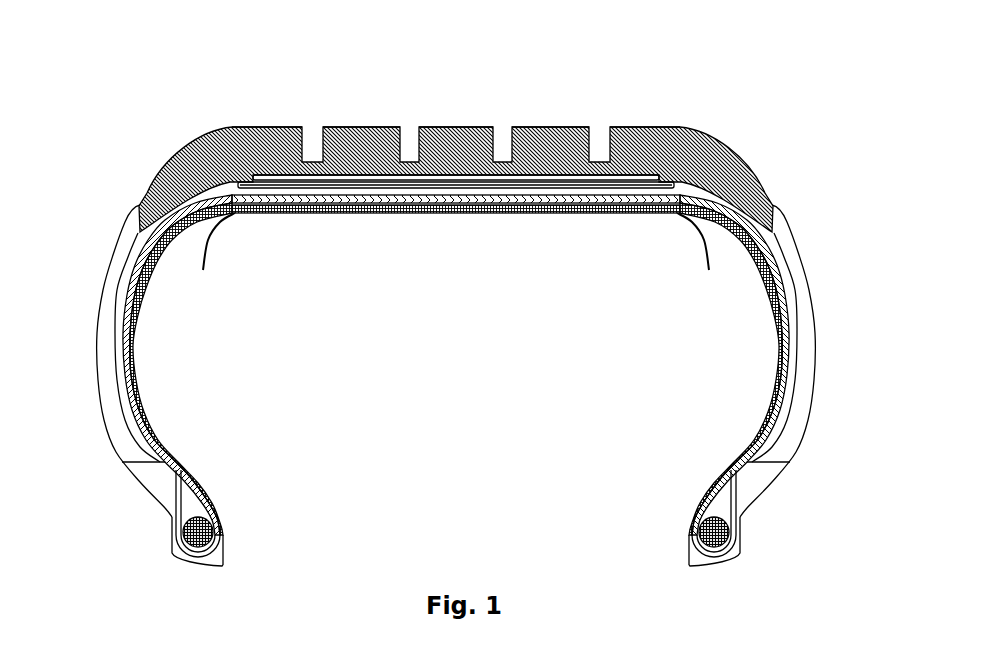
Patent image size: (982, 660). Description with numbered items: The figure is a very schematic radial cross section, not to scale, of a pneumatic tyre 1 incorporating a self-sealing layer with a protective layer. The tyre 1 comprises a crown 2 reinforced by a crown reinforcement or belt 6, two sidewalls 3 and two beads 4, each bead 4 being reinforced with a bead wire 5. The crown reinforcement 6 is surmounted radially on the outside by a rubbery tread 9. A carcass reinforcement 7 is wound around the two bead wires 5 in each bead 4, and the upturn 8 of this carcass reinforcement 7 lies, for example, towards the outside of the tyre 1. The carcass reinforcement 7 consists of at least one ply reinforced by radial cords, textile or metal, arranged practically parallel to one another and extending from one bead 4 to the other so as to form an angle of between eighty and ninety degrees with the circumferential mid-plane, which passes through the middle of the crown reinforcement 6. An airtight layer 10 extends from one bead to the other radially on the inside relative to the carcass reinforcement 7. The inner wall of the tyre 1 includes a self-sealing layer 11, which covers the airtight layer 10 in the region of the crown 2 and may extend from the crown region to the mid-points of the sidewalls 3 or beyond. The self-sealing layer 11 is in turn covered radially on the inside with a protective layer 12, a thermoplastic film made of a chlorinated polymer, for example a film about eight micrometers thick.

The tyre 1 is at (280, 80).
The crown 2 is at (488, 105).
The sidewall 3 is at (103, 333).
The bead 4 is at (160, 487).
The bead wire 5 is at (180, 549).
The crown reinforcement 6 is at (536, 190).
The carcass reinforcement 7 is at (140, 258).
The upturn 8 is at (133, 468).
The tread 9 is at (443, 127).
The airtight layer 10 is at (127, 337).
The self-sealing layer 11 is at (415, 197).
The protective layer 12 is at (643, 207).